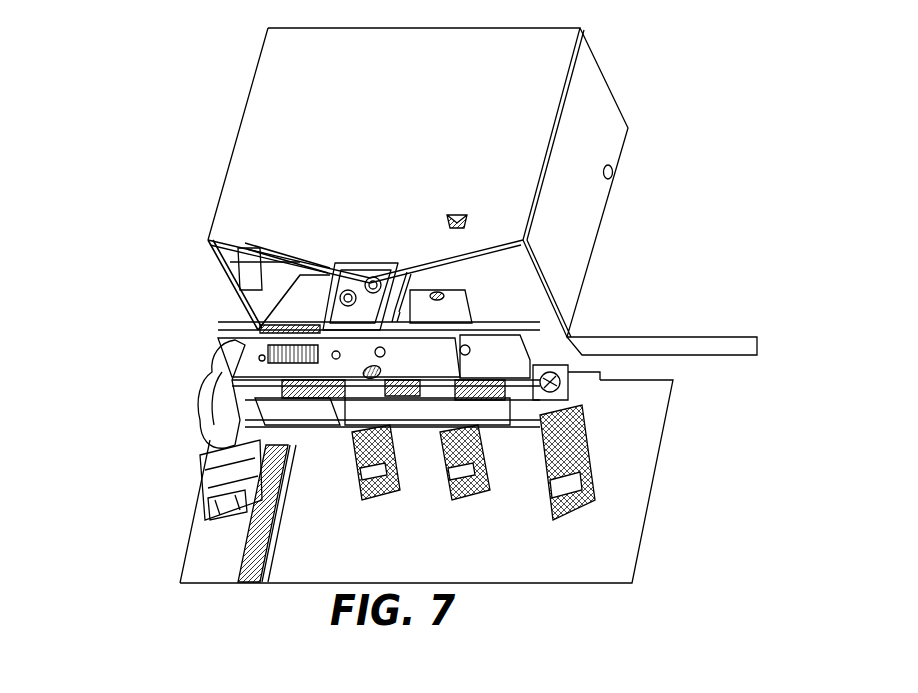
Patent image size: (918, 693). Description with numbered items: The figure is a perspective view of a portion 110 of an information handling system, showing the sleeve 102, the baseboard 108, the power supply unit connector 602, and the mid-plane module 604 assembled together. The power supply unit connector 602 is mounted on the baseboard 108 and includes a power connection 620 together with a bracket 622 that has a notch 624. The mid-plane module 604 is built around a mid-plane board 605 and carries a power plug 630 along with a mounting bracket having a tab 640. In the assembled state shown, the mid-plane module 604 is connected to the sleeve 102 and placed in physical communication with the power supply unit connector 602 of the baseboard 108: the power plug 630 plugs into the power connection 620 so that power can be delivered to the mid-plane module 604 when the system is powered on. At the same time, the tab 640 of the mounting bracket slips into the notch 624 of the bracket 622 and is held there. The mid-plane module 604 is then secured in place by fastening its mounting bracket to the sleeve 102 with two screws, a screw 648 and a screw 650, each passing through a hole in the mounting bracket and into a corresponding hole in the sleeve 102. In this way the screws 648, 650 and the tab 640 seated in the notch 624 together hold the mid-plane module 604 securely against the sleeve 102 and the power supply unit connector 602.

The portion of the information handling system 110 is at (484, 182).
The sleeve 102 is at (607, 115).
The baseboard 108 is at (651, 482).
The power supply unit connector 602 is at (597, 372).
The mid-plane module 604 is at (200, 332).
The mid-plane board 605 is at (238, 356).
The power connection 620 is at (203, 507).
The bracket 622 is at (352, 400).
The notch 624 is at (420, 395).
The power plug 630 is at (202, 460).
The tab 640 is at (572, 383).
The screw 648 is at (375, 262).
The screw 650 is at (250, 262).